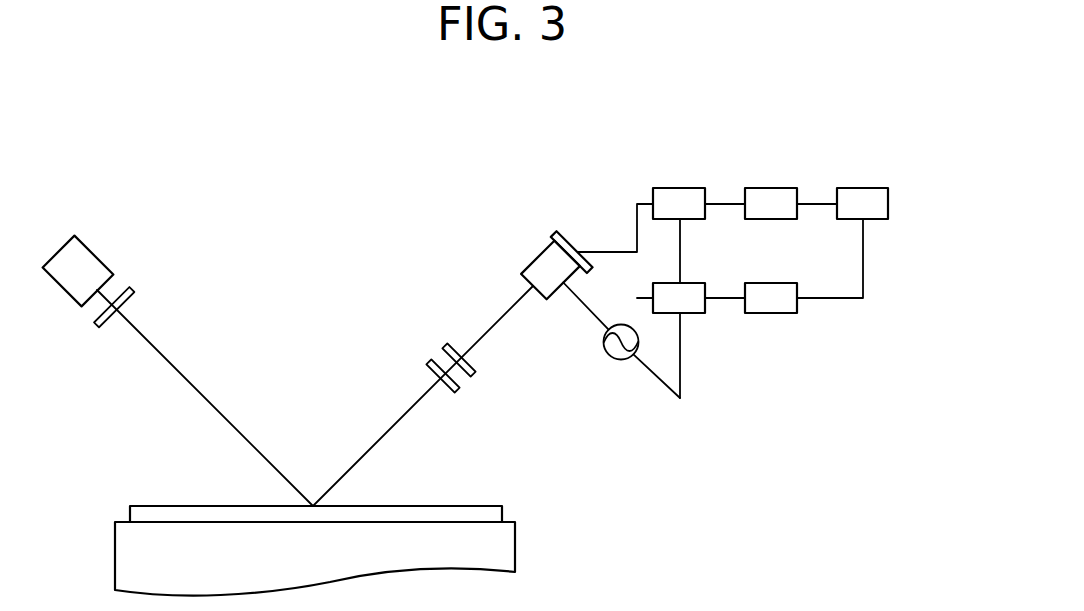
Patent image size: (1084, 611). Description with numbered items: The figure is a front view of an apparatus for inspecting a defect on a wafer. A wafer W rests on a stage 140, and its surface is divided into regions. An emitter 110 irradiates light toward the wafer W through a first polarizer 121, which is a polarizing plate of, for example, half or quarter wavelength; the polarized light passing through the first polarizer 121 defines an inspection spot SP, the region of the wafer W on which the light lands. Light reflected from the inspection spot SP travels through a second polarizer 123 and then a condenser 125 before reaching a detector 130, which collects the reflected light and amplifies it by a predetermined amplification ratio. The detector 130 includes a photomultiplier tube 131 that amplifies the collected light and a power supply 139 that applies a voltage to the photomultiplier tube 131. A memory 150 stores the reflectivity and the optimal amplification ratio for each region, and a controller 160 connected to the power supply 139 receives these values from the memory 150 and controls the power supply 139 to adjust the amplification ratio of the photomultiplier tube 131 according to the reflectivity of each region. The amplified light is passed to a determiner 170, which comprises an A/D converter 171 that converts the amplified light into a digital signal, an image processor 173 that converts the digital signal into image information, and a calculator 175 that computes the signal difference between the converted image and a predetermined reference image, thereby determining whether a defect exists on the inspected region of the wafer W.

The emitter 110 is at (93, 262).
The first polarizer 121 is at (132, 289).
The second polarizer 123 is at (457, 393).
The condenser 125 is at (475, 378).
The detector 130 is at (547, 314).
The photomultiplier tube 131 is at (543, 270).
The power supply 139 is at (603, 335).
The stage 140 is at (500, 548).
The memory 150 is at (780, 282).
The controller 160 is at (697, 282).
The determiner 170 is at (780, 161).
The A/D converter 171 is at (697, 187).
The image processor 173 is at (777, 187).
The calculator 175 is at (872, 181).
The inspection spot SP is at (313, 500).
The wafer W is at (492, 512).